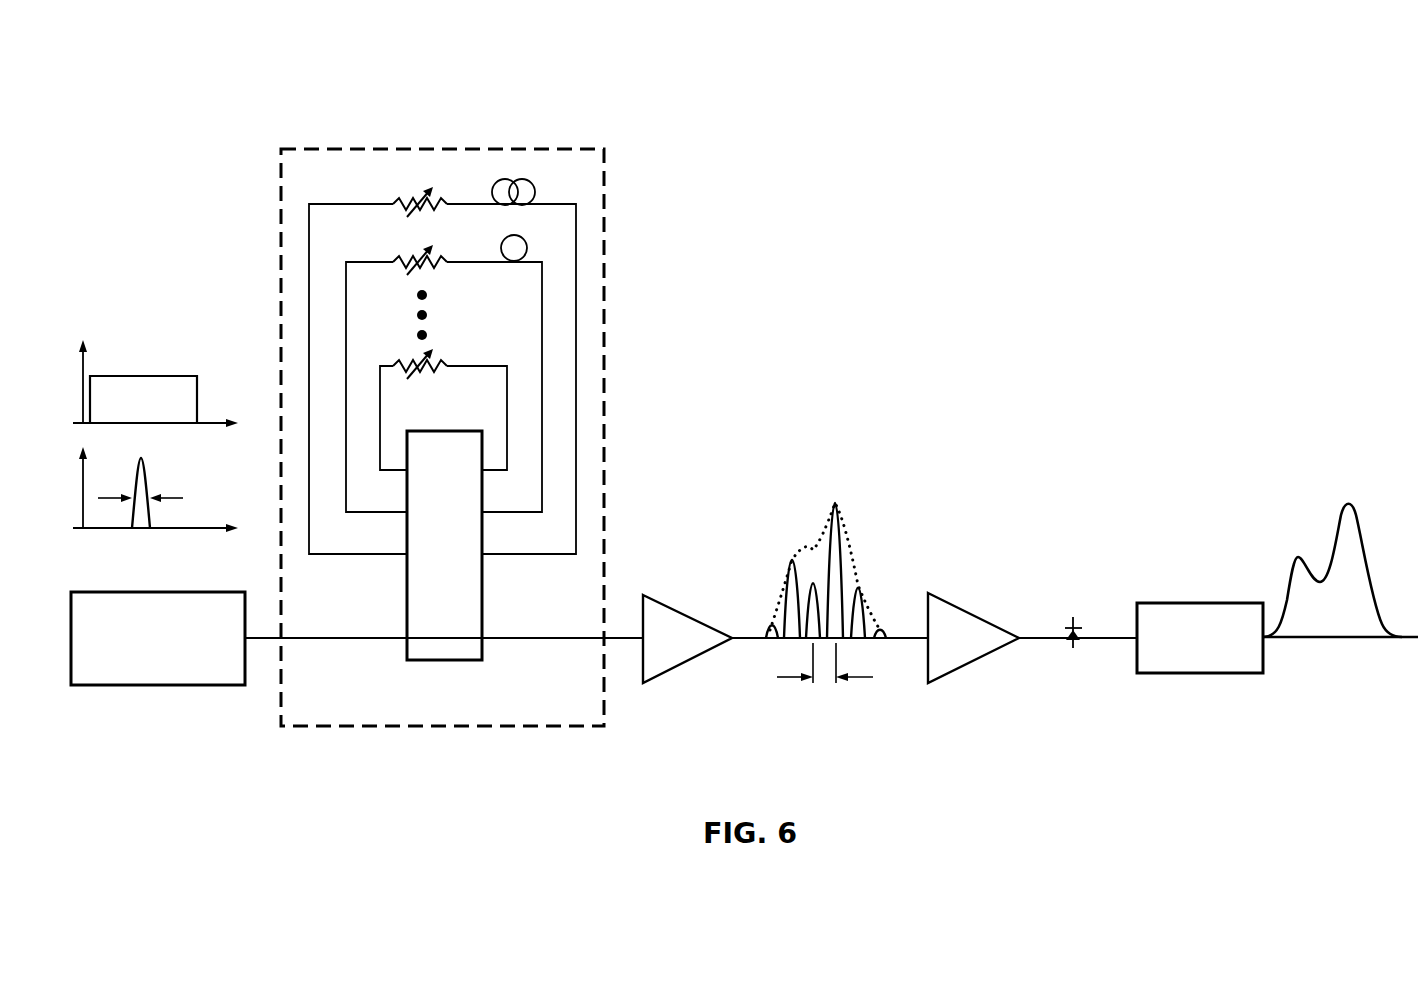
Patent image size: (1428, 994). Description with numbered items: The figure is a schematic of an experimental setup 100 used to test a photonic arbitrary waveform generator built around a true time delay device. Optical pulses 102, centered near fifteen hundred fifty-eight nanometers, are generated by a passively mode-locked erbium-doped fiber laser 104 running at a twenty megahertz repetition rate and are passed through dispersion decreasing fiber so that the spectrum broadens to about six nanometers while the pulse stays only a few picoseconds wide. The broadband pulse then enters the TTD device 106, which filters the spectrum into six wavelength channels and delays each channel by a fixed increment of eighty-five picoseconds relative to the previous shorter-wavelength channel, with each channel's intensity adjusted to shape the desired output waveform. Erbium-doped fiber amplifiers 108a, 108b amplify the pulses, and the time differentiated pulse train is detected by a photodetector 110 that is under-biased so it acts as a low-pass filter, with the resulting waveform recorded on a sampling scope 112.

The experimental setup 100 is at (1264, 148).
The optical pulses 102 is at (147, 320).
The erbium-doped fiber laser 104 is at (103, 687).
The TTD device 106 is at (372, 143).
The erbium-doped fiber amplifier 108a is at (680, 612).
The erbium-doped fiber amplifier 108b is at (963, 608).
The photodetector 110 is at (1087, 590).
The sampling scope 112 is at (1222, 673).